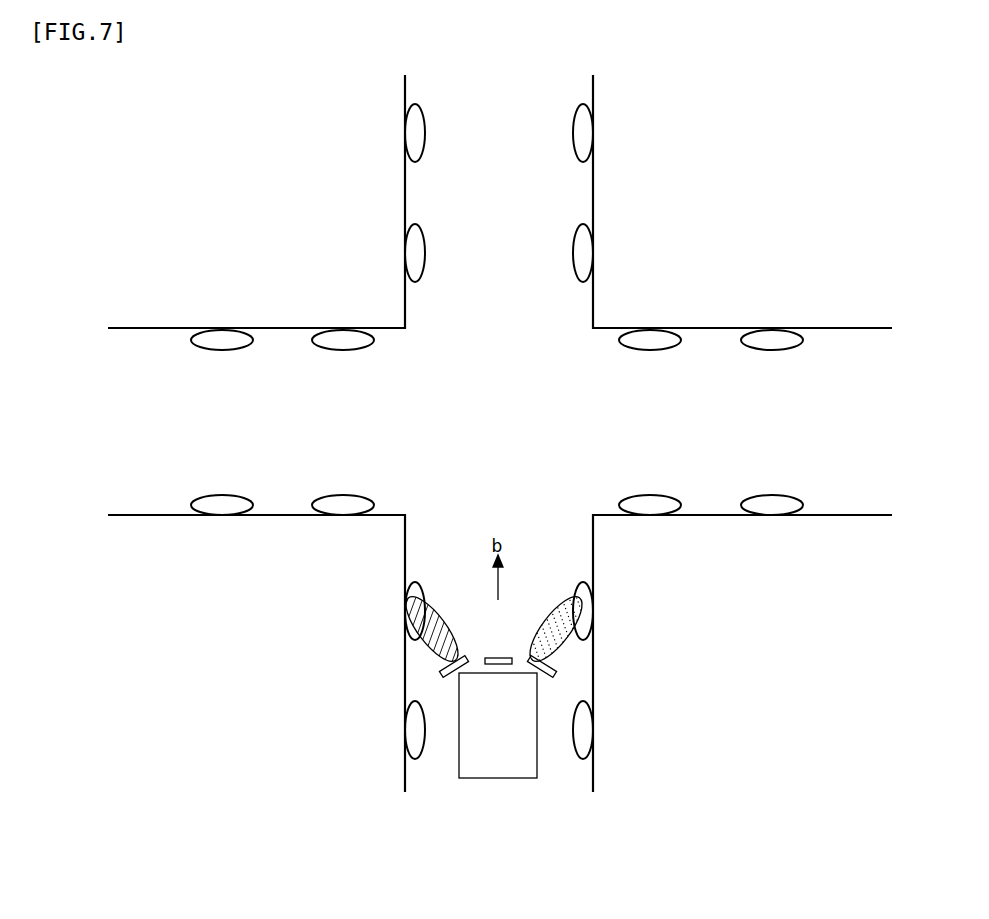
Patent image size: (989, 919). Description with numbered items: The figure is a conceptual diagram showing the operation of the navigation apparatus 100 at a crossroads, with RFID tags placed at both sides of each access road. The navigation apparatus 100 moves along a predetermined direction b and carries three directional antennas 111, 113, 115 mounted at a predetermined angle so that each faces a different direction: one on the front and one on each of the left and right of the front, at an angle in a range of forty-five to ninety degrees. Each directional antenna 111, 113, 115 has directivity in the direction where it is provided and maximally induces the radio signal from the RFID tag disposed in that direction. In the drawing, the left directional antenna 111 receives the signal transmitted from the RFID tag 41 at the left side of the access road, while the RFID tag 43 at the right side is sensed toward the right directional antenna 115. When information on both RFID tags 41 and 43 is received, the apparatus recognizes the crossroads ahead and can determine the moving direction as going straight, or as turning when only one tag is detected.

The RFID tag 41 is at (408, 602).
The RFID tag 43 is at (592, 606).
The navigation apparatus 100 is at (502, 796).
The directional antenna 111 is at (441, 673).
The directional antenna 113 is at (500, 658).
The directional antenna 115 is at (555, 673).